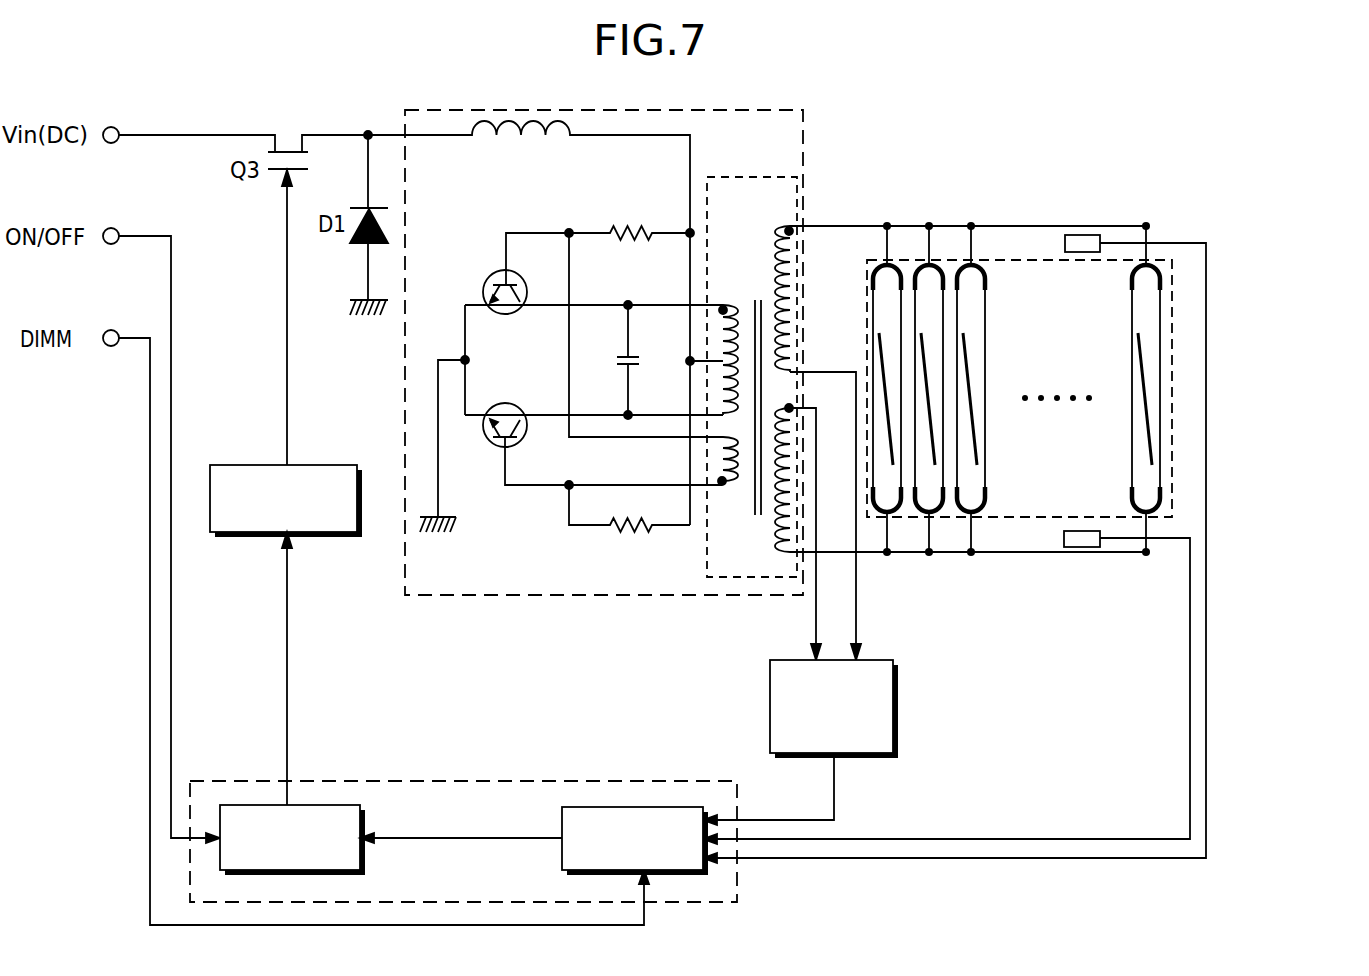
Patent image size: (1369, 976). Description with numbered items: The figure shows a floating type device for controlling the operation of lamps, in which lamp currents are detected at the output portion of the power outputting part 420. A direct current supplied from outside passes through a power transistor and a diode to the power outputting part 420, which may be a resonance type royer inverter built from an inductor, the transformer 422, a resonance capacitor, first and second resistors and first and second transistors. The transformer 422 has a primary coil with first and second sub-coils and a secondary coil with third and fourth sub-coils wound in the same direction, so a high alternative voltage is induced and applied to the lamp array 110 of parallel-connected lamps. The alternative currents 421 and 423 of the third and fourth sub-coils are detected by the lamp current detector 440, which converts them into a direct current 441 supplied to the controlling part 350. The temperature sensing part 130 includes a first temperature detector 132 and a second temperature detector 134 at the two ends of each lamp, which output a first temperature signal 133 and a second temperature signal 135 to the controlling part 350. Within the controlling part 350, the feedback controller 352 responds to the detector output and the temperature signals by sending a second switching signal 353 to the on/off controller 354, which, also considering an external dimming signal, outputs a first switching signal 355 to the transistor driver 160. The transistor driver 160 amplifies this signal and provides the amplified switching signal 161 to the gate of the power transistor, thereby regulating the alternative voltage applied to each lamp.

The lamp array 110 is at (998, 260).
The temperature sensing part 130 is at (1288, 212).
The first temperature detector 132 is at (1085, 235).
The first temperature signal 133 is at (1020, 858).
The second temperature detector 134 is at (1083, 547).
The second temperature signal 135 is at (1019, 839).
The transistor driver 160 is at (322, 465).
The amplified switching signal 161 is at (287, 357).
The controlling part 350 is at (628, 781).
The feedback controller 352 is at (562, 818).
The second switching signal 353 is at (475, 840).
The on/off controller 354 is at (365, 822).
The first switching signal 355 is at (287, 683).
The power outputting part 420 is at (803, 133).
The alternative current of the third sub-coil 421 is at (856, 620).
The transformer 422 is at (732, 177).
The alternative current of the fourth sub-coil 423 is at (816, 626).
The lamp current detector 440 is at (898, 690).
The direct current 441 is at (834, 800).